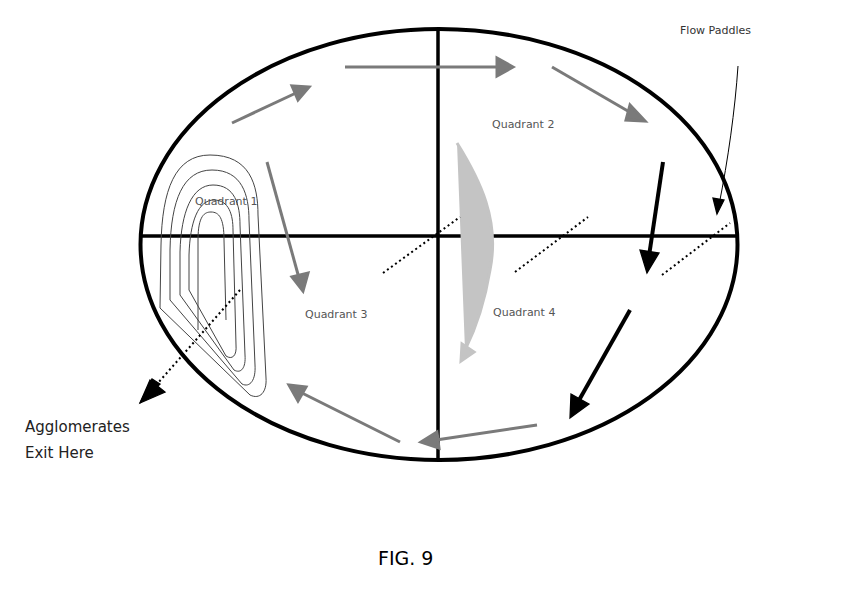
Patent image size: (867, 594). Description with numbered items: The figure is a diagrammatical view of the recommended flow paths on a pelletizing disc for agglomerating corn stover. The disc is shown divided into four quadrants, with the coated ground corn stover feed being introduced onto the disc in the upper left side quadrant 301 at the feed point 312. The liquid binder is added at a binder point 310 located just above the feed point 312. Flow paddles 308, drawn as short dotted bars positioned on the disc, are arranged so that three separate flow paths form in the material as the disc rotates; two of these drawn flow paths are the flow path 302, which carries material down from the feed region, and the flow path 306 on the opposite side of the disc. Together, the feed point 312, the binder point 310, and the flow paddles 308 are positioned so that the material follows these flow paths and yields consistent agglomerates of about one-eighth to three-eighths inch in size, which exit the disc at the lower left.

The upper left side quadrant 301 is at (180, 133).
The flow path 302 is at (287, 212).
The flow path 306 is at (651, 206).
The flow paddles 308 is at (413, 260).
The binder addition point 310 is at (309, 129).
The feed point 312 is at (307, 164).